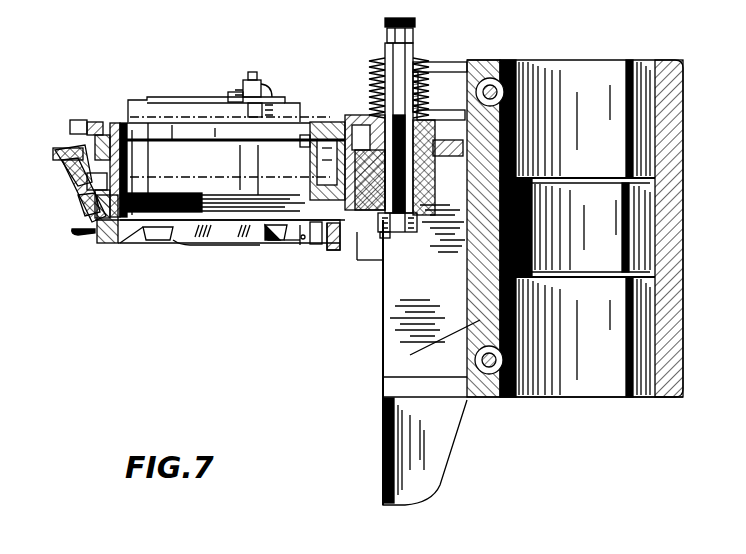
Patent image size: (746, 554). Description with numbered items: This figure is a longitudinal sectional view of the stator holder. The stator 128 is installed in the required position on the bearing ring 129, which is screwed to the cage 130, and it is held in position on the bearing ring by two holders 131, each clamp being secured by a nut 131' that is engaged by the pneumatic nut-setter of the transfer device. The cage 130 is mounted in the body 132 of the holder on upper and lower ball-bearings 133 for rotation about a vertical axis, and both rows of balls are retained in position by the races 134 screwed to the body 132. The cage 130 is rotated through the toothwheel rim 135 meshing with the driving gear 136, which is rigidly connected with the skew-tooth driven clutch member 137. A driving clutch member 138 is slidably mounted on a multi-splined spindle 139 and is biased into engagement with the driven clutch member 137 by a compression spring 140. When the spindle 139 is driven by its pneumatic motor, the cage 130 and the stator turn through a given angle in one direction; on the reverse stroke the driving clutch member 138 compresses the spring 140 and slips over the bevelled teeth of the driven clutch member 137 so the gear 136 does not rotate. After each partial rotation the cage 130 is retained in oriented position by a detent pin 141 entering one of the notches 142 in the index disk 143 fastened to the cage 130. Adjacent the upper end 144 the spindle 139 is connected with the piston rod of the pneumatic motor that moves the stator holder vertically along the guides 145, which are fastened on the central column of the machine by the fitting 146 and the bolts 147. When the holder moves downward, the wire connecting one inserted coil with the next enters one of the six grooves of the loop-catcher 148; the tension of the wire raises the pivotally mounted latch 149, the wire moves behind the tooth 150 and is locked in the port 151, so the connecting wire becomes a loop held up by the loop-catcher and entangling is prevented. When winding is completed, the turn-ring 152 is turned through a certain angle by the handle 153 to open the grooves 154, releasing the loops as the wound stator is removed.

The stator 128 is at (142, 100).
The bearing ring 129 is at (272, 228).
The cage 130 is at (290, 225).
The holder 131 is at (230, 71).
The nut 131' is at (260, 82).
The body 132 is at (370, 232).
The ball-bearings 133 is at (80, 178).
The races 134 is at (62, 150).
The toothwheel rim 135 is at (72, 135).
The driving gear 136 is at (440, 145).
The driven clutch member 137 is at (372, 98).
The driving clutch member 138 is at (362, 122).
The multi-splined spindle 139 is at (414, 36).
The compression spring 140 is at (445, 120).
The detent pin 141 is at (343, 121).
The notches 142 is at (80, 120).
The index disk 143 is at (95, 122).
The upper end 144 is at (412, 22).
The guides 145 is at (383, 340).
The fitting 146 is at (383, 375).
The bolts 147 is at (496, 86).
The loop-catcher 148 is at (320, 230).
The latch 149 is at (165, 240).
The tooth 150 is at (152, 235).
The port 151 is at (250, 235).
The turn-ring 152 is at (345, 232).
The handle 153 is at (82, 236).
The grooves 154 is at (285, 232).